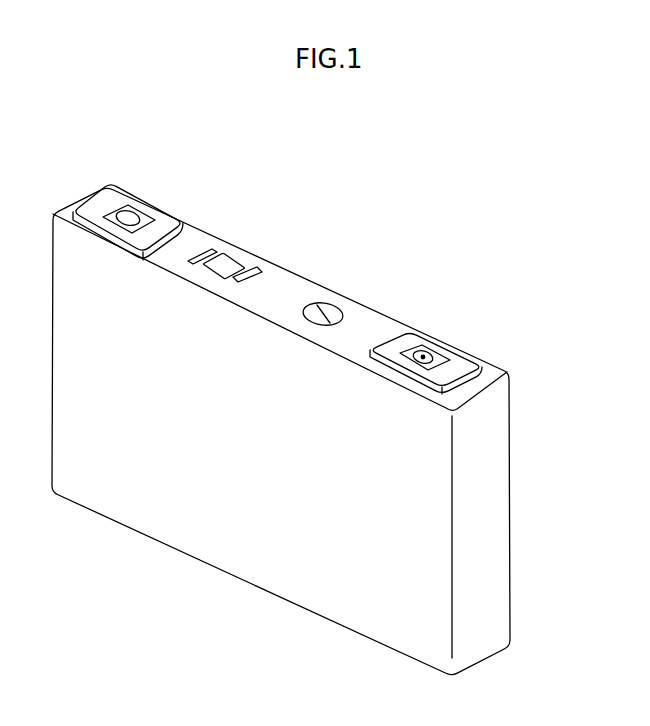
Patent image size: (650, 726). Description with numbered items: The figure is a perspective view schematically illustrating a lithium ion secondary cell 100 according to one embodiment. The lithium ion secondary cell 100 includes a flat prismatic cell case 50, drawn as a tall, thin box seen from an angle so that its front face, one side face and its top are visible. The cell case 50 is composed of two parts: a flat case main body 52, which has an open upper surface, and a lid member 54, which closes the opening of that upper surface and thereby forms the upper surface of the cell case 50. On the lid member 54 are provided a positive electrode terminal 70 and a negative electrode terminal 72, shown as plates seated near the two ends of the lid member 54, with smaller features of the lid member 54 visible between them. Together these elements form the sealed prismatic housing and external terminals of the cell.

The lithium ion secondary cell 100 is at (510, 172).
The cell case 50 is at (295, 556).
The case main body 52 is at (202, 518).
The lid member 54 is at (280, 277).
The positive electrode terminal 70 is at (438, 352).
The negative electrode terminal 72 is at (133, 218).